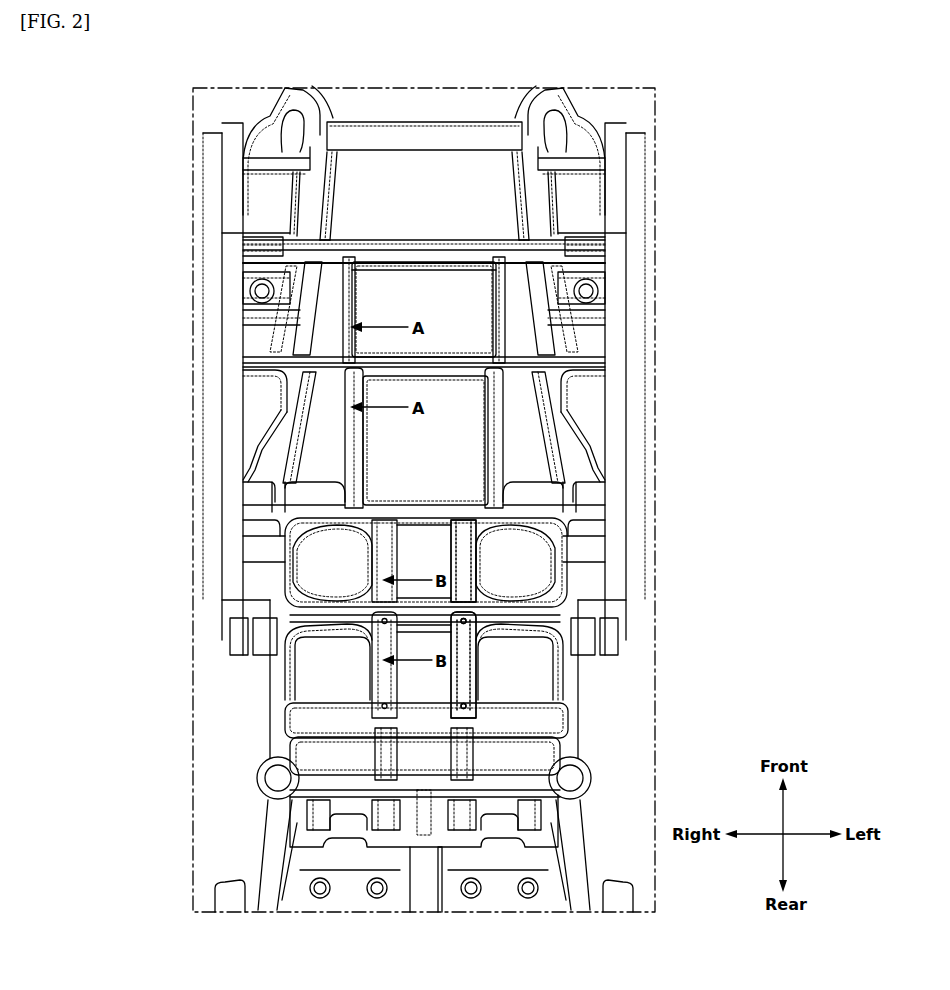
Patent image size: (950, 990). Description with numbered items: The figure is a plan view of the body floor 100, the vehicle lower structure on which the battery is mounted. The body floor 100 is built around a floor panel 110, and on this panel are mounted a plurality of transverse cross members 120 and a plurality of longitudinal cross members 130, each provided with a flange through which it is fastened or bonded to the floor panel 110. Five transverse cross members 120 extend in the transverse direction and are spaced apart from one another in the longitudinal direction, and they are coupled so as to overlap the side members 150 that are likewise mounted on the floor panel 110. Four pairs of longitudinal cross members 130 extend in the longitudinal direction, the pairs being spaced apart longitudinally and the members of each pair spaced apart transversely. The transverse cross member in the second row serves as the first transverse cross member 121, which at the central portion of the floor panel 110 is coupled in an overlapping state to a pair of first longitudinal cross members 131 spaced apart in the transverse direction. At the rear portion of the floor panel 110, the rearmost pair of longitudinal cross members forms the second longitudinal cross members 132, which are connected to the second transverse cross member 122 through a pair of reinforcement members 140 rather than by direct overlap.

The body floor 100 is at (210, 126).
The floor panel 110 is at (425, 175).
The transverse cross members 120 is at (610, 237).
The first transverse cross member 121 is at (527, 367).
The second transverse cross member 122 is at (563, 647).
The longitudinal cross members 130 is at (312, 312).
The first longitudinal cross member 131 is at (352, 452).
The second longitudinal cross member 132 is at (383, 680).
The reinforcement member 140 is at (282, 643).
The side members 150 is at (530, 160).